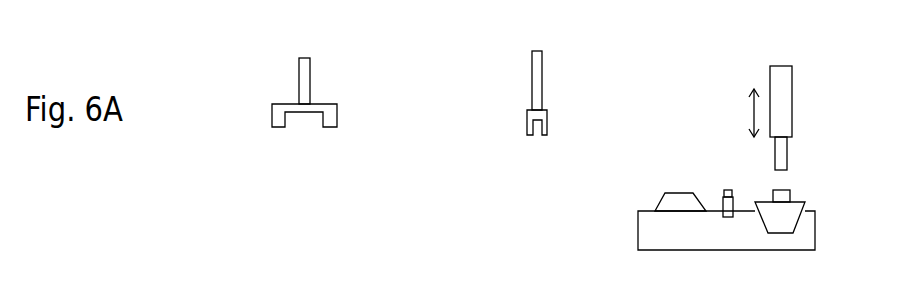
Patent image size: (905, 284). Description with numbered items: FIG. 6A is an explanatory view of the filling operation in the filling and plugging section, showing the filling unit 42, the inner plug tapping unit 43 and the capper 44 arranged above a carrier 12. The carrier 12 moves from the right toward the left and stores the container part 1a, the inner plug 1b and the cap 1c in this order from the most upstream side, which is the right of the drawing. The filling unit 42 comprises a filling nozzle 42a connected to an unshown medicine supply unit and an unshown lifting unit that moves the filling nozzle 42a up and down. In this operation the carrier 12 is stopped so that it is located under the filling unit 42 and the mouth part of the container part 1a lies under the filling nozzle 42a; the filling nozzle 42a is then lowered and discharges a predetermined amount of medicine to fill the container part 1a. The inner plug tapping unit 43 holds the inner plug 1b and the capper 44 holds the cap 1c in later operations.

The capper 44 is at (329, 71).
The inner plug tapping unit 43 is at (553, 68).
The filling unit 42 is at (779, 51).
The filling nozzle 42a is at (787, 152).
The container part 1a is at (795, 202).
The inner plug 1b is at (727, 190).
The cap 1c is at (682, 192).
The carrier 12 is at (748, 250).